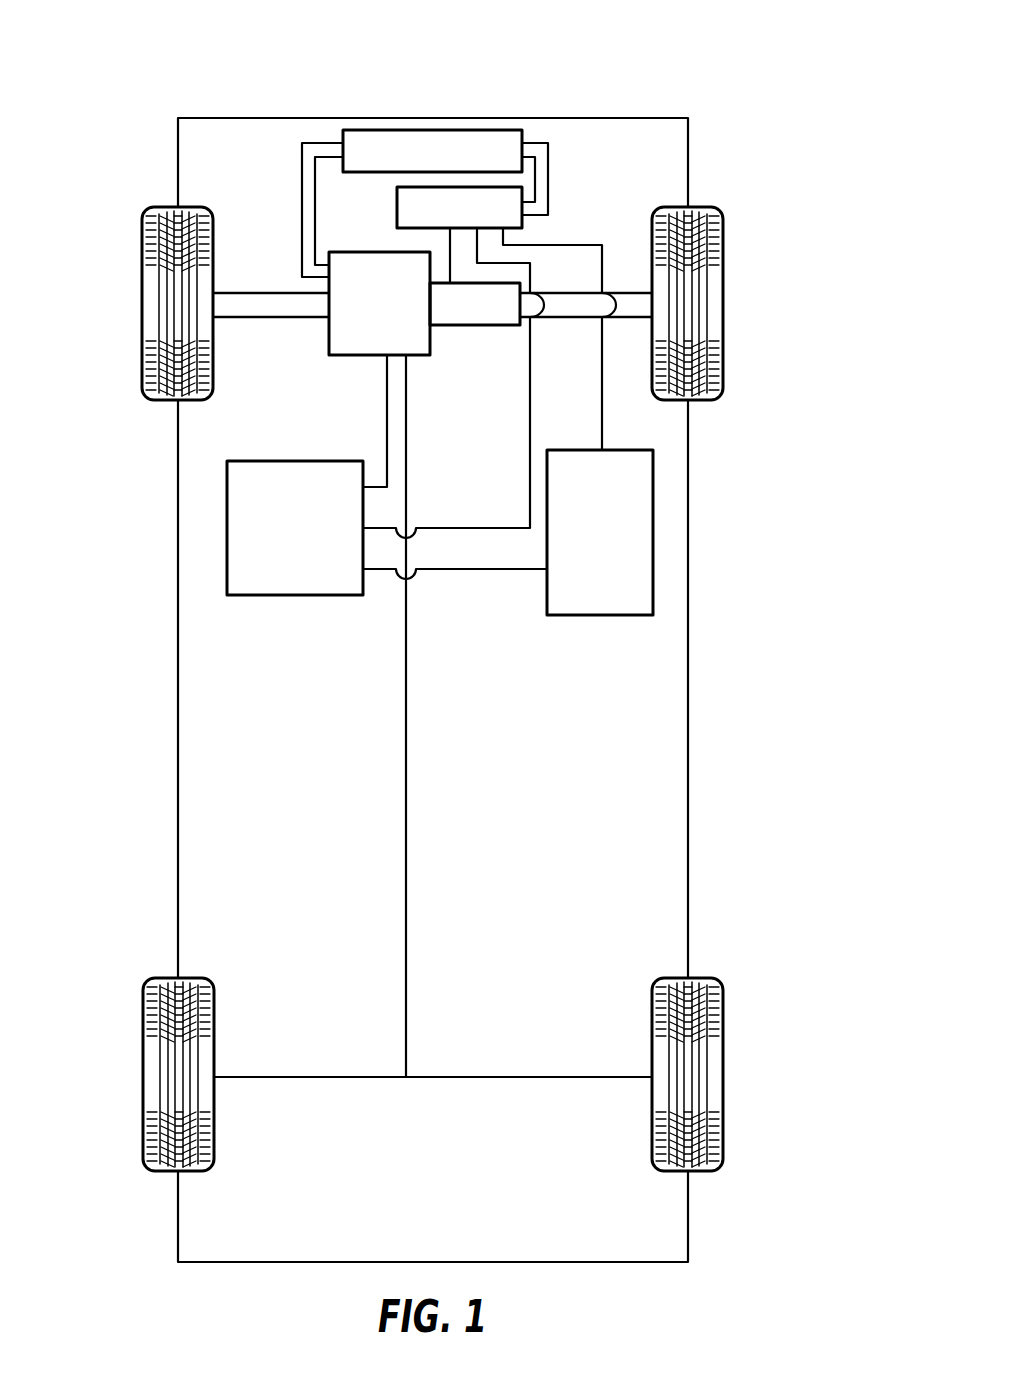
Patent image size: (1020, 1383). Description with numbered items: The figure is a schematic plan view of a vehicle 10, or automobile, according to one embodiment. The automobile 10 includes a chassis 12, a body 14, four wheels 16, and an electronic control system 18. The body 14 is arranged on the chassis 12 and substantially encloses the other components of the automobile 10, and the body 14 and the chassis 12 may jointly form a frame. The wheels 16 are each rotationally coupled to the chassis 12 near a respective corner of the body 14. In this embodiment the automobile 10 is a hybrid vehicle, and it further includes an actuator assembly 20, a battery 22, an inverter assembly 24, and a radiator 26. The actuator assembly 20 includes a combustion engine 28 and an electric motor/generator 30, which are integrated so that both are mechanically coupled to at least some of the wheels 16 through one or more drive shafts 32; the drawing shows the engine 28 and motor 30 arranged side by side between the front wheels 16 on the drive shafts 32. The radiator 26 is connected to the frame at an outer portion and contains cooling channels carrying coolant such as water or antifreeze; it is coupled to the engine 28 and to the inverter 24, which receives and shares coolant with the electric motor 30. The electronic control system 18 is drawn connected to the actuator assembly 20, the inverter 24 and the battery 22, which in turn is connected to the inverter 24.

The vehicle 10 is at (433, 633).
The chassis 12 is at (406, 715).
The body 14 is at (178, 512).
The wheels 16 is at (143, 275).
The electronic control system 18 is at (290, 596).
The actuator assembly 20 is at (389, 350).
The battery 22 is at (600, 616).
The inverter assembly 24 is at (397, 213).
The radiator 26 is at (380, 130).
The combustion engine 28 is at (329, 348).
The electric motor/generator 30 is at (475, 327).
The drive shafts 32 is at (275, 292).